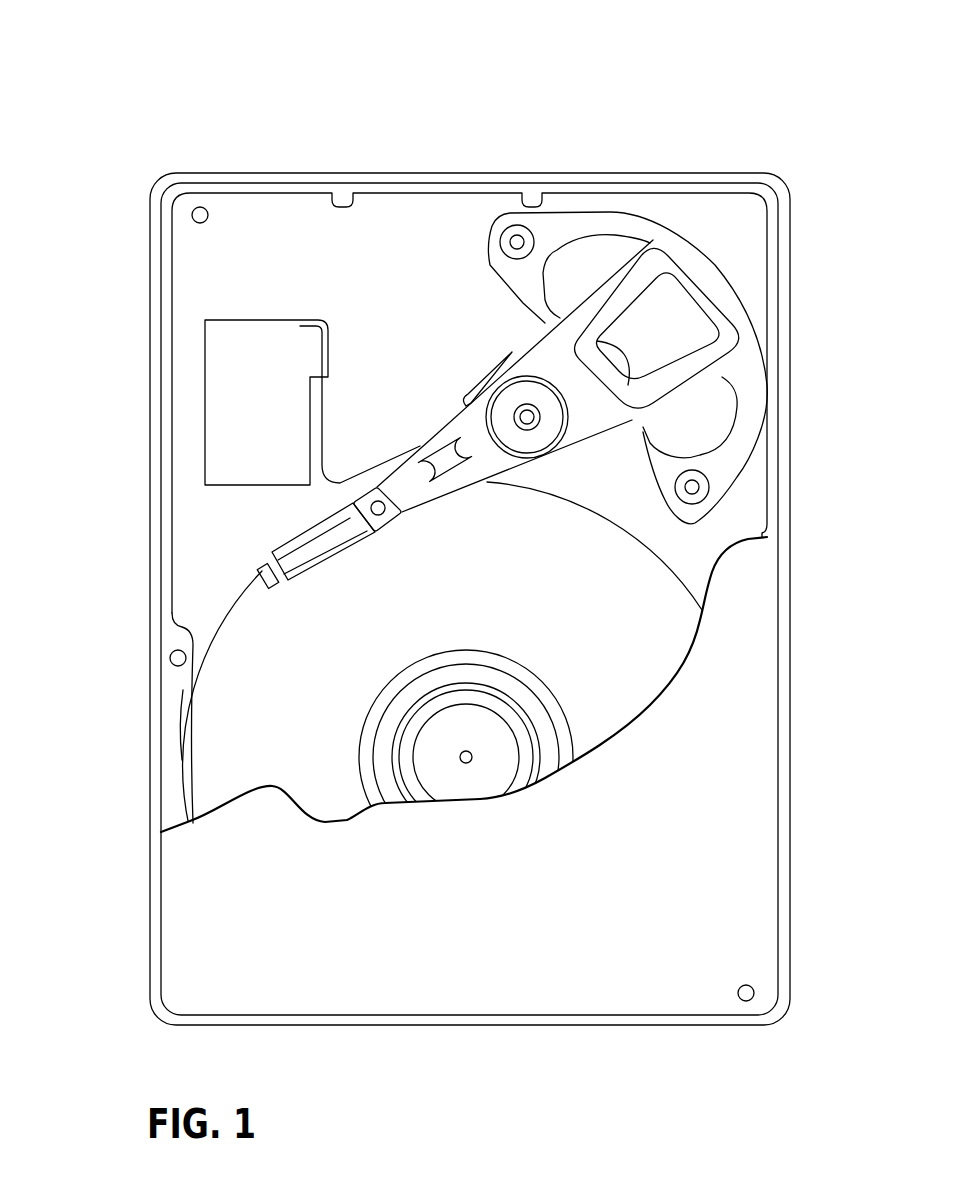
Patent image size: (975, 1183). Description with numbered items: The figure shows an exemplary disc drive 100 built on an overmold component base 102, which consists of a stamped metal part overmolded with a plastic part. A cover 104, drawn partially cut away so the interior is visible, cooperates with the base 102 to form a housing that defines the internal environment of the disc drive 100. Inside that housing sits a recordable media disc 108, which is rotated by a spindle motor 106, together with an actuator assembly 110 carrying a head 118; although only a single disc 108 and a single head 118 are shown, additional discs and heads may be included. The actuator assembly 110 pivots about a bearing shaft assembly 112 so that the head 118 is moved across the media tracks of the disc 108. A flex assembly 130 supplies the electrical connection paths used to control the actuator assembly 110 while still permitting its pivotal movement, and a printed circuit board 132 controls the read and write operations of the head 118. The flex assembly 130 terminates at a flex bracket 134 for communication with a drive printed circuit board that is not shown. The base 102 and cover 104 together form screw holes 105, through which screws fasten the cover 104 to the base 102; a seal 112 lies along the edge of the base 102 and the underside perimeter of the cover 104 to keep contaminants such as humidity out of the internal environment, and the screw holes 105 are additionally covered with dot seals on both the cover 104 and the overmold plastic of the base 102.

The disc drive 100 is at (459, 517).
The overmold component base 102 is at (398, 279).
The cover 104 is at (477, 966).
The screw holes 105 is at (194, 209).
The spindle motor 106 is at (469, 764).
The recordable media disc 108 is at (302, 766).
The actuator assembly 110 is at (490, 497).
The bearing shaft assembly / seal 112 is at (302, 192).
The head 118 is at (266, 595).
The flex assembly 130 is at (428, 425).
The printed circuit board 132 is at (494, 362).
The flex bracket 134 is at (275, 423).